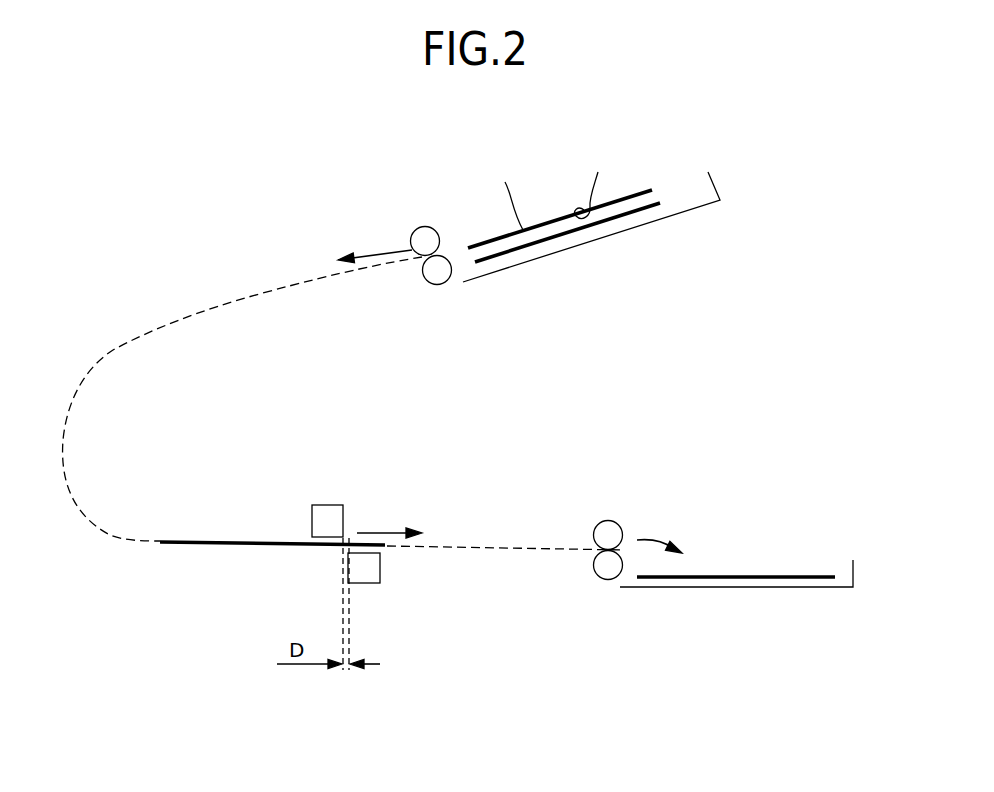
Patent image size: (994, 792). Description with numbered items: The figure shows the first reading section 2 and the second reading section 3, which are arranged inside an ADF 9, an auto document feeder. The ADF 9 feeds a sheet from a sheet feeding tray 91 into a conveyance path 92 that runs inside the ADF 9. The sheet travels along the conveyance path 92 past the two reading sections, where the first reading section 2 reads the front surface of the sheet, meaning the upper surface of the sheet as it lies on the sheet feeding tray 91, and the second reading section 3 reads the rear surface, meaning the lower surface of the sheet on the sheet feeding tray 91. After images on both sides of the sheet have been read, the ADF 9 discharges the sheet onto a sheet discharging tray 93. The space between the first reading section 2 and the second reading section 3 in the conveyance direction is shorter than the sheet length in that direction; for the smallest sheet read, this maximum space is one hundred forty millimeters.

The ADF 9 is at (165, 232).
The sheet feeding tray 91 is at (700, 208).
The conveyance path 92 is at (83, 380).
The second reading section 3 is at (327, 505).
The first reading section 2 is at (367, 583).
The sheet discharging tray 93 is at (853, 572).